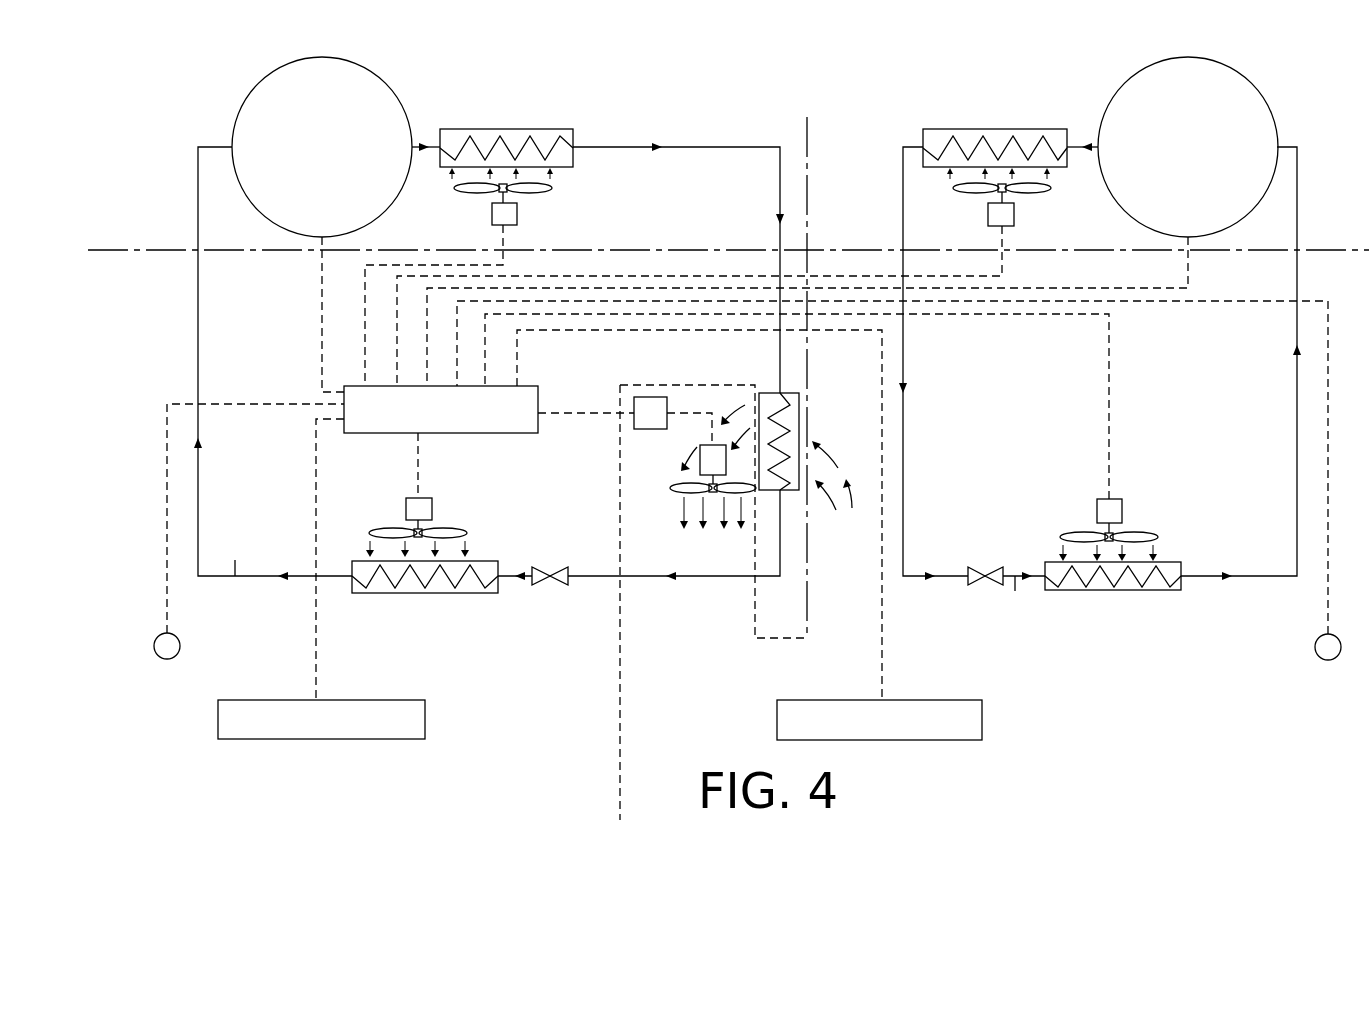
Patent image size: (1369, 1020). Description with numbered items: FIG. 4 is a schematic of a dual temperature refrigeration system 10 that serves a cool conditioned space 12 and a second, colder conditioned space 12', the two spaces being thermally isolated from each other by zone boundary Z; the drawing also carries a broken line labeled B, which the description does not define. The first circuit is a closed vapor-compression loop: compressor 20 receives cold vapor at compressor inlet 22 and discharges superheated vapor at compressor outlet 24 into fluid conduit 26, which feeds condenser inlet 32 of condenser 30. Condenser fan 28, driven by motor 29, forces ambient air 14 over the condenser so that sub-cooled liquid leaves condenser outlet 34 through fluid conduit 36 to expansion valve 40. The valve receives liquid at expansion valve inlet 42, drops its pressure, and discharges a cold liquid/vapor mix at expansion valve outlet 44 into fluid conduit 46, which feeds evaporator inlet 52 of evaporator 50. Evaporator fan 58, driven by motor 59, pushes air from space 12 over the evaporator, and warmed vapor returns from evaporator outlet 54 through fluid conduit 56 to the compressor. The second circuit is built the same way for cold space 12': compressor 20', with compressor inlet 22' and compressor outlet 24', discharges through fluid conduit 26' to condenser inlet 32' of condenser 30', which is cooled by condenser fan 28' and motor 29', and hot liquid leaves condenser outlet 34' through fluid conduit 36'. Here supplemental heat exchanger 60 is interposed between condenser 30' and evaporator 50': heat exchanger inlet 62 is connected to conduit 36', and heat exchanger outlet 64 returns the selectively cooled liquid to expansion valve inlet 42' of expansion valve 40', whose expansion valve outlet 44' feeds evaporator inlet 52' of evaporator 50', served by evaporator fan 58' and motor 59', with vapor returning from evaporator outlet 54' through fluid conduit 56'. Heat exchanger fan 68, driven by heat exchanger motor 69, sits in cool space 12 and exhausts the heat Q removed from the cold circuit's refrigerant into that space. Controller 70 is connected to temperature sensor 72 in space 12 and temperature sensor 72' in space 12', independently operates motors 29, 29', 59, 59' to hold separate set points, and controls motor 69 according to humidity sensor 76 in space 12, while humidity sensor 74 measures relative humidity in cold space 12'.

The refrigeration system 10 is at (679, 98).
The conditioned space 12 is at (1110, 672).
The second conditioned space 12' is at (653, 602).
The ambient air 14 is at (802, 107).
The zone boundary Z is at (808, 142).
The boundary line B is at (1326, 248).
The compressor 20 is at (869, 221).
The compressor 20' is at (302, 145).
The compressor inlet 22 is at (1253, 342).
The compressor inlet 22' is at (261, 324).
The compressor outlet 24 is at (1089, 108).
The compressor outlet 24' is at (417, 104).
The fluid conduit 26 is at (1085, 180).
The fluid conduit 26' is at (423, 180).
The condenser fan 28 is at (988, 196).
The condenser fan 28' is at (527, 194).
The condenser motor 29 is at (731, 293).
The condenser motor 29' is at (475, 294).
The condenser 30 is at (995, 123).
The condenser 30' is at (506, 124).
The condenser inlet 32 is at (1050, 113).
The condenser inlet 32' is at (458, 114).
The condenser outlet 34 is at (915, 116).
The condenser outlet 34' is at (583, 115).
The fluid conduit 36 is at (906, 363).
The fluid conduit 36' is at (678, 249).
The expansion valve 40 is at (979, 594).
The expansion valve 40' is at (562, 552).
The expansion valve inlet 42 is at (939, 593).
The expansion valve inlet 42' is at (578, 601).
The expansion valve outlet 44 is at (1002, 549).
The expansion valve outlet 44' is at (527, 543).
The fluid conduit 46 is at (1025, 601).
The evaporator 50 is at (1113, 592).
The evaporator 50' is at (425, 591).
The evaporator inlet 52 is at (1025, 537).
The evaporator inlet 52' is at (493, 528).
The evaporator outlet 54 is at (1203, 543).
The evaporator outlet 54' is at (348, 600).
The fluid conduit 56 is at (1260, 603).
The fluid conduit 56' is at (240, 547).
The evaporator fan 58 is at (1106, 517).
The evaporator fan 58' is at (394, 529).
The evaporator motor 59 is at (823, 418).
The evaporator motor 59' is at (391, 476).
The supplemental heat exchanger 60 is at (762, 394).
The heat exchanger inlet 62 is at (779, 398).
The heat exchanger outlet 64 is at (782, 492).
The heat exchanger fan 68 is at (680, 486).
The heat exchanger motor 69 is at (704, 452).
The controller 70 is at (497, 433).
The temperature sensor 72 is at (749, 557).
The temperature sensor 72' is at (321, 599).
The humidity sensor 74 is at (180, 642).
The humidity sensor 76 is at (1315, 647).